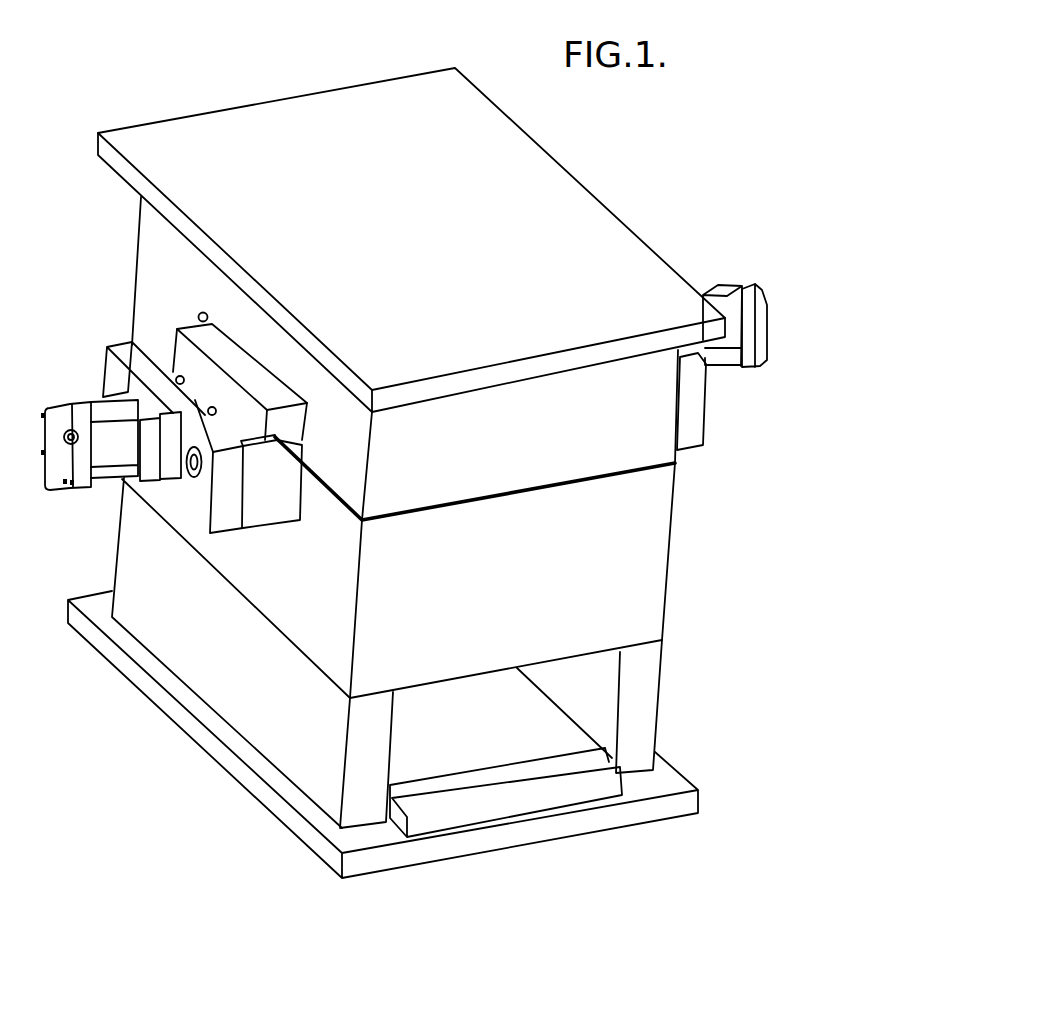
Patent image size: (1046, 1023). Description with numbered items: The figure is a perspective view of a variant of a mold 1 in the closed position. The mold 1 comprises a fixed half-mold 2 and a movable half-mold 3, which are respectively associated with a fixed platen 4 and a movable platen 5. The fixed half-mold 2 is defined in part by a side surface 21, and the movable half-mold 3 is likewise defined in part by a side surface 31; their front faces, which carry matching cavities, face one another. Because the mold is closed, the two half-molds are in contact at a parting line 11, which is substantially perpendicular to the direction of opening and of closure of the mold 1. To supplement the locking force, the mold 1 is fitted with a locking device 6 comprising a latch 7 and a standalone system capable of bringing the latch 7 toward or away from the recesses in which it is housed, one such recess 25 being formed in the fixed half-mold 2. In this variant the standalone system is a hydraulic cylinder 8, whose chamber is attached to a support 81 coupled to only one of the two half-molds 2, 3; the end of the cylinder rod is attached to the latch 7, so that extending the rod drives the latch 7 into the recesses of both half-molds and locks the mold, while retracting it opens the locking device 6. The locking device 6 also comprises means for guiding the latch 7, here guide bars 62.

The mold 1 is at (232, 785).
The fixed half-mold 2 is at (133, 220).
The side surface 21 is at (191, 276).
The recess 25 is at (198, 316).
The movable half-mold 3 is at (682, 512).
The side surface 31 is at (625, 593).
The fixed platen 4 is at (297, 120).
The movable platen 5 is at (493, 840).
The locking device 6 is at (115, 482).
The guide bars 62 is at (190, 471).
The latch 7 is at (218, 352).
The hydraulic cylinder 8 is at (110, 415).
The support 81 is at (128, 348).
The parting line 11 is at (677, 466).